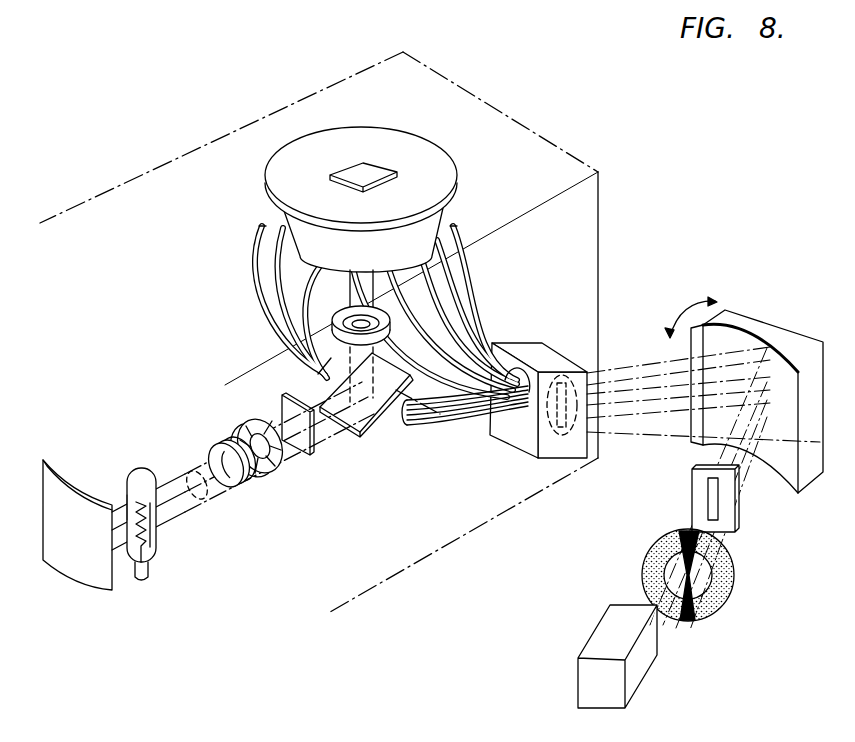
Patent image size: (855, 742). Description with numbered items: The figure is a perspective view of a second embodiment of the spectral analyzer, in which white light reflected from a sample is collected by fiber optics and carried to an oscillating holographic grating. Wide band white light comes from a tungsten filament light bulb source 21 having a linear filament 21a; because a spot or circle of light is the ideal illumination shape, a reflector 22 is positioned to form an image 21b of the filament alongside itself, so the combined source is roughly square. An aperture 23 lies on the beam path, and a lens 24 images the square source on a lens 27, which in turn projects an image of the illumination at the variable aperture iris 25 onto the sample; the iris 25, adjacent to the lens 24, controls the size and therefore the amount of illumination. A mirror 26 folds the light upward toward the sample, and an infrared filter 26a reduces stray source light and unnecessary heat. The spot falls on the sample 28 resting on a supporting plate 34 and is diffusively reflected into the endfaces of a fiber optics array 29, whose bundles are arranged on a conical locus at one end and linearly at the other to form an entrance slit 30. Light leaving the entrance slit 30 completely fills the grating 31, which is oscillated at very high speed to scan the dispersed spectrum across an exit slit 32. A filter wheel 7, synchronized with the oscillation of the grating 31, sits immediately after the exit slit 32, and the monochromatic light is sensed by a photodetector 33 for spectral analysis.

The filter wheel 7 is at (648, 555).
The tungsten filament light bulb source 21 is at (155, 550).
The filament 21a is at (145, 522).
The image of filament 21b is at (130, 508).
The reflector 22 is at (87, 563).
The aperture 23 is at (193, 477).
The lens 24 is at (250, 492).
The variable aperture iris 25 is at (245, 428).
The mirror 26 is at (370, 432).
The infrared filter 26a is at (315, 452).
The lens 27 is at (345, 325).
The sample 28 is at (365, 168).
The fiber optics array 29 is at (447, 320).
The entrance slit 30 is at (550, 440).
The grating 31 is at (740, 326).
The exit slit 32 is at (737, 522).
The photodetector 33 is at (642, 667).
The supporting plate 34 is at (437, 173).